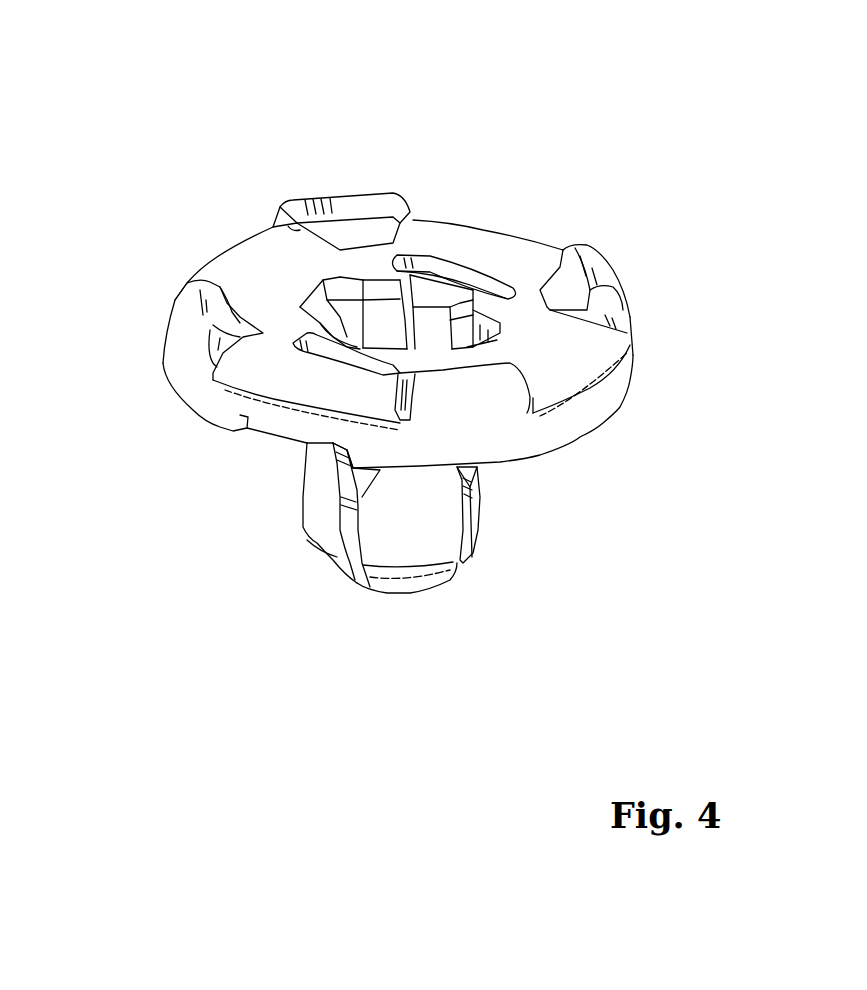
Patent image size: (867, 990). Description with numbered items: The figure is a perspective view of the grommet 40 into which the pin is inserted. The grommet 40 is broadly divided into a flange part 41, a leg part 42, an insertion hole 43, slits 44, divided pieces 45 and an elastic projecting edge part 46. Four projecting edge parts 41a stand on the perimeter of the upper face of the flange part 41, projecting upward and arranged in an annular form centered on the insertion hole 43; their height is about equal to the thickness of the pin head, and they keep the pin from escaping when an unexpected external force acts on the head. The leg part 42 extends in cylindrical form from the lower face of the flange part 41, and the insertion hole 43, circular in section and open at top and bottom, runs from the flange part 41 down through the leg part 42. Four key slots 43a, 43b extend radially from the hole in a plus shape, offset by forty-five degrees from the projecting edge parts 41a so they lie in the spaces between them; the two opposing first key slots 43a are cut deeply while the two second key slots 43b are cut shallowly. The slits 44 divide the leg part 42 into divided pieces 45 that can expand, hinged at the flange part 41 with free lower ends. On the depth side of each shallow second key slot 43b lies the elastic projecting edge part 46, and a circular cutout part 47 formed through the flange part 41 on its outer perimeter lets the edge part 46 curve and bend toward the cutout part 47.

The grommet 40 is at (140, 117).
The flange part 41 is at (633, 361).
The projecting edge parts 41a is at (331, 192).
The leg part 42 is at (610, 613).
The insertion hole 43 is at (420, 340).
The first key slots 43a is at (317, 293).
The second key slots 43b is at (420, 280).
The slits 44 is at (353, 582).
The divided pieces 45 is at (313, 530).
The elastic projecting edge part 46 is at (443, 273).
The cutout part 47 is at (490, 280).